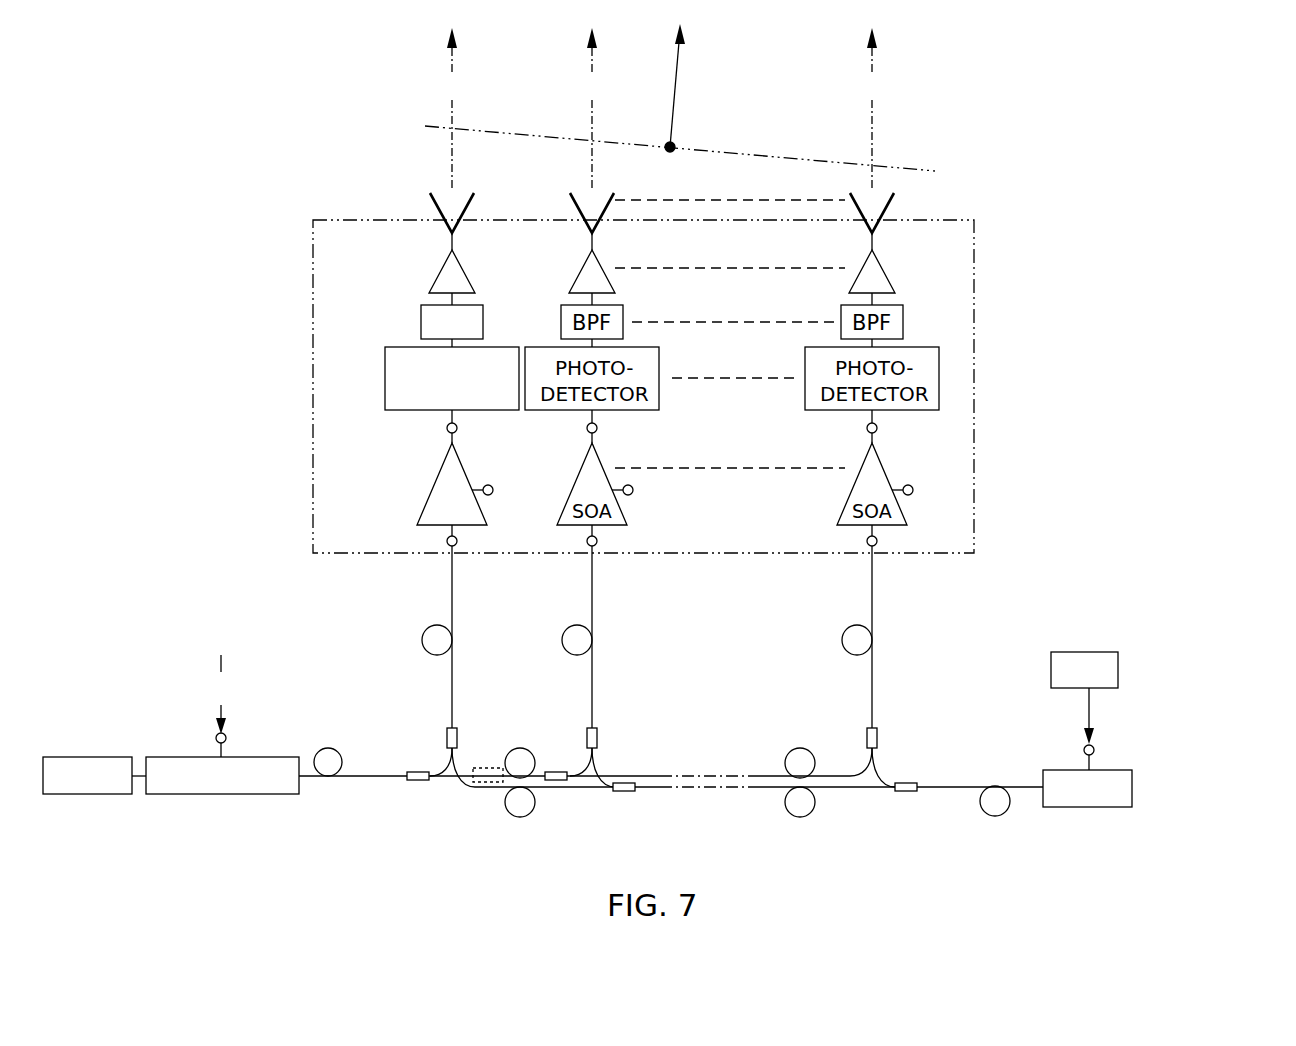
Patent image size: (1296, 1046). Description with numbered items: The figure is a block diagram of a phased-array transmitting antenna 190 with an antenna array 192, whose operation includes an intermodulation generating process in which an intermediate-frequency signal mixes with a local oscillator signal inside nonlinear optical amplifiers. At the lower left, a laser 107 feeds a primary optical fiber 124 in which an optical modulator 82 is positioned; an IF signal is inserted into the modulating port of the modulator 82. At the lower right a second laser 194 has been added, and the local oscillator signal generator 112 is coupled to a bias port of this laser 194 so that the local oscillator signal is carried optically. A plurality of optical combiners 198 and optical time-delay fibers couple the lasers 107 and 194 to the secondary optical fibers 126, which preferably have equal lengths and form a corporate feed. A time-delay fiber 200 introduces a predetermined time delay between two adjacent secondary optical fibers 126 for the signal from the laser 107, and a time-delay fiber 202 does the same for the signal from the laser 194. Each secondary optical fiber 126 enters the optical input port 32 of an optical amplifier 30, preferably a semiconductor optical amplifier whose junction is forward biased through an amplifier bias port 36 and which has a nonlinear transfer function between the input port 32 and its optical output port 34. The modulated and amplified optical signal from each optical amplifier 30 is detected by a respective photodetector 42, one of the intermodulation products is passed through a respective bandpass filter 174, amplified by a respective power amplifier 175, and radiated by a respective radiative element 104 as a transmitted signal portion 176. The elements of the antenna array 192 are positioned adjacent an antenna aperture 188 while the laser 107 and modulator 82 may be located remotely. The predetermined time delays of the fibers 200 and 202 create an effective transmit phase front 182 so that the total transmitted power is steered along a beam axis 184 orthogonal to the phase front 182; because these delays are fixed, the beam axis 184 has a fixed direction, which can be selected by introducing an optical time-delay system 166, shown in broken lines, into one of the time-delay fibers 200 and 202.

The transmitted signal portion 176 is at (452, 61).
The beam axis 184 is at (680, 88).
The transmit phase front 182 is at (680, 149).
The antenna aperture 188 is at (924, 194).
The phased-array transmitting antenna 190 is at (1096, 192).
The antenna array 192 is at (982, 337).
The radiative element 104 is at (440, 211).
The power amplifier 175 is at (443, 262).
The bandpass filter 174 is at (421, 312).
The photodetector 42 is at (385, 368).
The optical output port 34 is at (447, 428).
The optical amplifier 30 is at (433, 480).
The amplifier bias port 36 is at (492, 487).
The optical input port 32 is at (446, 542).
The secondary optical fiber 126 is at (452, 598).
The optical combiner 198 is at (446, 740).
The optical time-delay system 166 is at (497, 768).
The time-delay fiber 200 is at (540, 775).
The time-delay fiber 202 is at (568, 789).
The primary optical fiber 124 is at (351, 777).
The laser 107 is at (95, 757).
The optical modulator 82 is at (173, 757).
The local oscillator signal generator 112 is at (1118, 660).
The laser 194 is at (1132, 783).